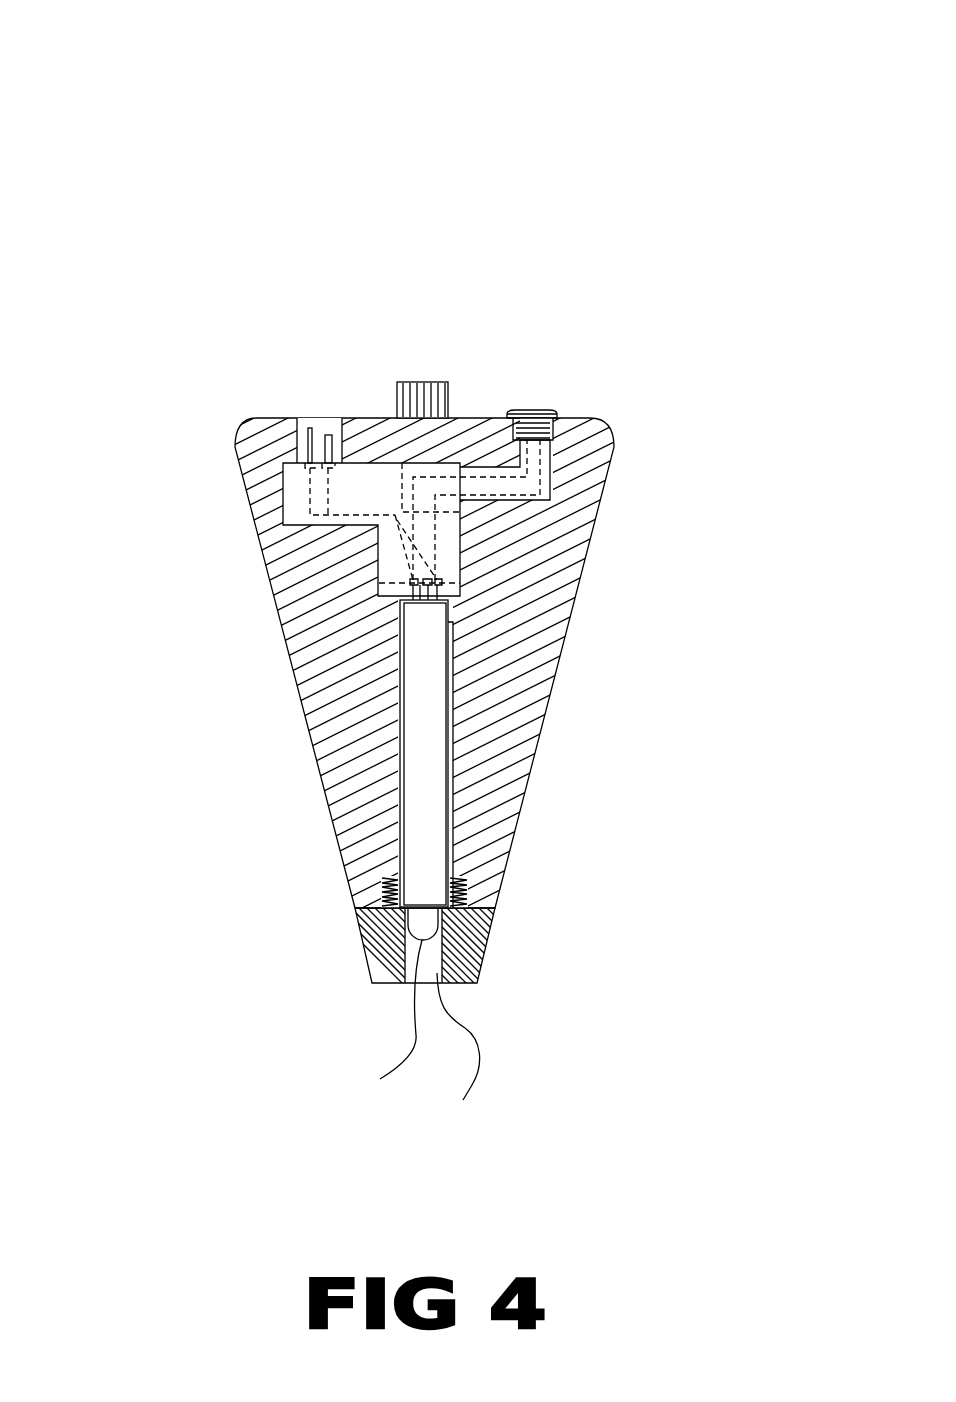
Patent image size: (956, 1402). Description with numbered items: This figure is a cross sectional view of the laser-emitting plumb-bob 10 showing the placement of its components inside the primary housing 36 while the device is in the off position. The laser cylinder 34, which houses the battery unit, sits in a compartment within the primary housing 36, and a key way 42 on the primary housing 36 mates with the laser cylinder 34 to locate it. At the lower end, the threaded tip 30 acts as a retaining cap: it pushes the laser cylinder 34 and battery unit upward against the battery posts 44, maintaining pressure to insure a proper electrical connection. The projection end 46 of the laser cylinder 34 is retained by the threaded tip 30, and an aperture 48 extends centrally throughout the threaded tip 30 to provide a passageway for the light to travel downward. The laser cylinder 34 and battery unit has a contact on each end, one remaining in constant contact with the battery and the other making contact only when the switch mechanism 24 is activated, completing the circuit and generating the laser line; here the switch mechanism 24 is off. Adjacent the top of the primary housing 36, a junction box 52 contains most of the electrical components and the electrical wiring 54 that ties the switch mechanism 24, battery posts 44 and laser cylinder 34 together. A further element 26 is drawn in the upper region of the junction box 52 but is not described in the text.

The laser-emitting plumb-bob 10 is at (396, 573).
The on/off switch 24 is at (542, 408).
The contact pin 26 is at (322, 440).
The threaded tip 30 is at (482, 962).
The laser cylinder 34 is at (452, 792).
The primary housing 36 is at (273, 593).
The key way 42 is at (452, 683).
The battery posts 44 is at (492, 610).
The projection end 46 is at (369, 1024).
The aperture 48 is at (450, 1059).
The junction box 52 is at (283, 498).
The electrical wiring 54 is at (220, 390).